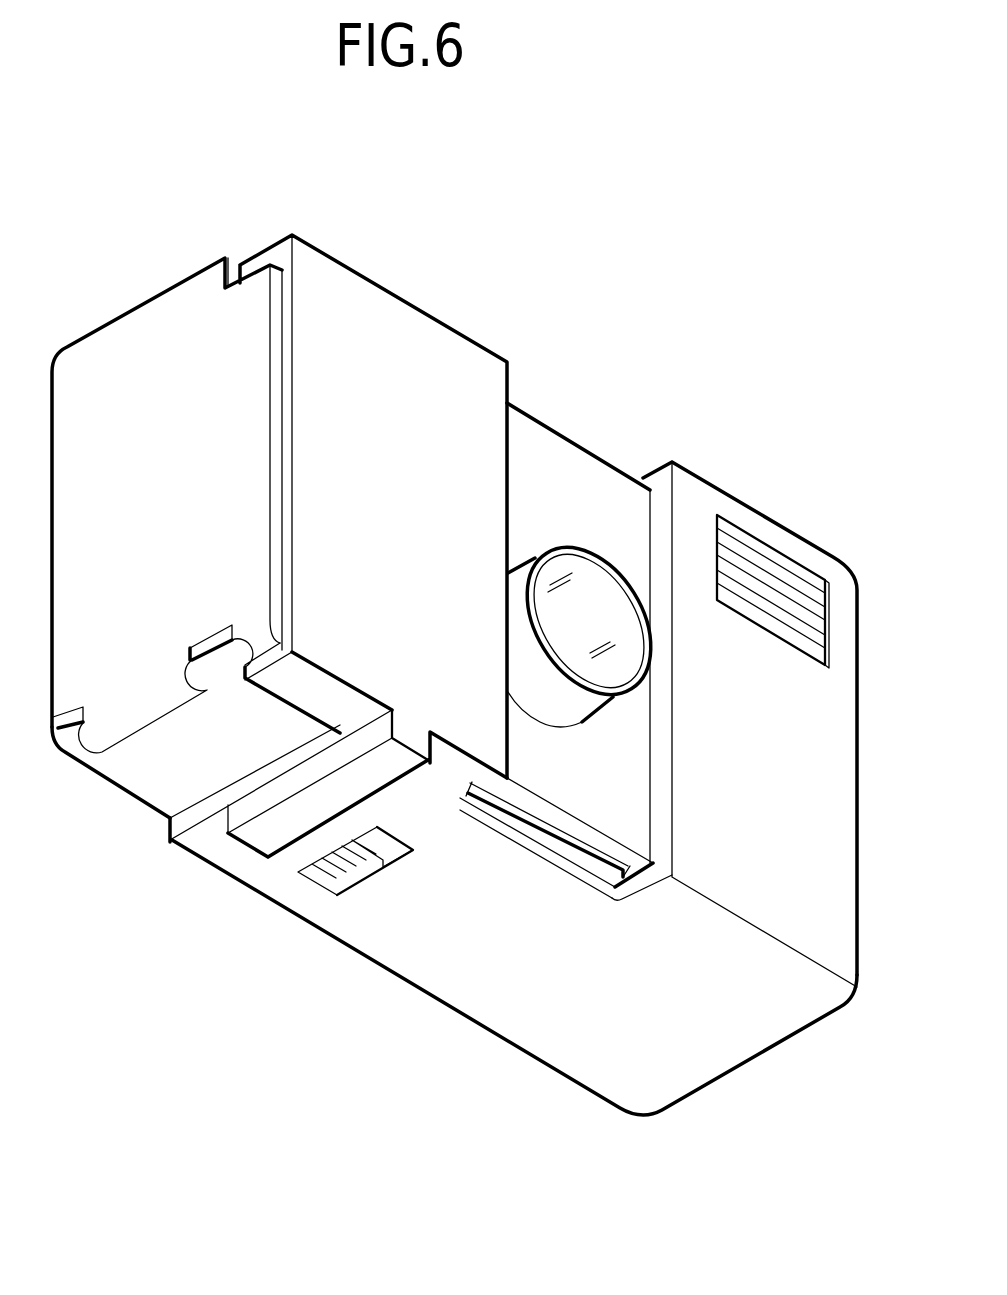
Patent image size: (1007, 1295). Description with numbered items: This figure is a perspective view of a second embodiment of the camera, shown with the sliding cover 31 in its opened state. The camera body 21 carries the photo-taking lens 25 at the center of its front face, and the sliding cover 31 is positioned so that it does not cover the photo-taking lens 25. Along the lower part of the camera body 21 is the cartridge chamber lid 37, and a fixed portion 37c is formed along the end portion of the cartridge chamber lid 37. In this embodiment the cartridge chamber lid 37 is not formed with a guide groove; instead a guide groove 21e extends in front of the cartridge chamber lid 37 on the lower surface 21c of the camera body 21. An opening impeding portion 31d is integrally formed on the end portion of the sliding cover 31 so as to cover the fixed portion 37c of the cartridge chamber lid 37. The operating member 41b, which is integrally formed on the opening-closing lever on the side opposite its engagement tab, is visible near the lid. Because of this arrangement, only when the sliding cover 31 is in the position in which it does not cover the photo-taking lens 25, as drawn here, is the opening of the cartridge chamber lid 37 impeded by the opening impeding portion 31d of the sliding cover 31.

The camera body 21 is at (737, 490).
The lower surface 21c is at (690, 1070).
The guide groove 21e is at (565, 838).
The photo-taking lens 25 is at (592, 548).
The sliding cover 31 is at (412, 338).
The opening impeding portion 31d is at (281, 833).
The cartridge chamber lid 37 is at (147, 770).
The fixed portion 37c is at (206, 843).
The operating member 41b is at (352, 877).